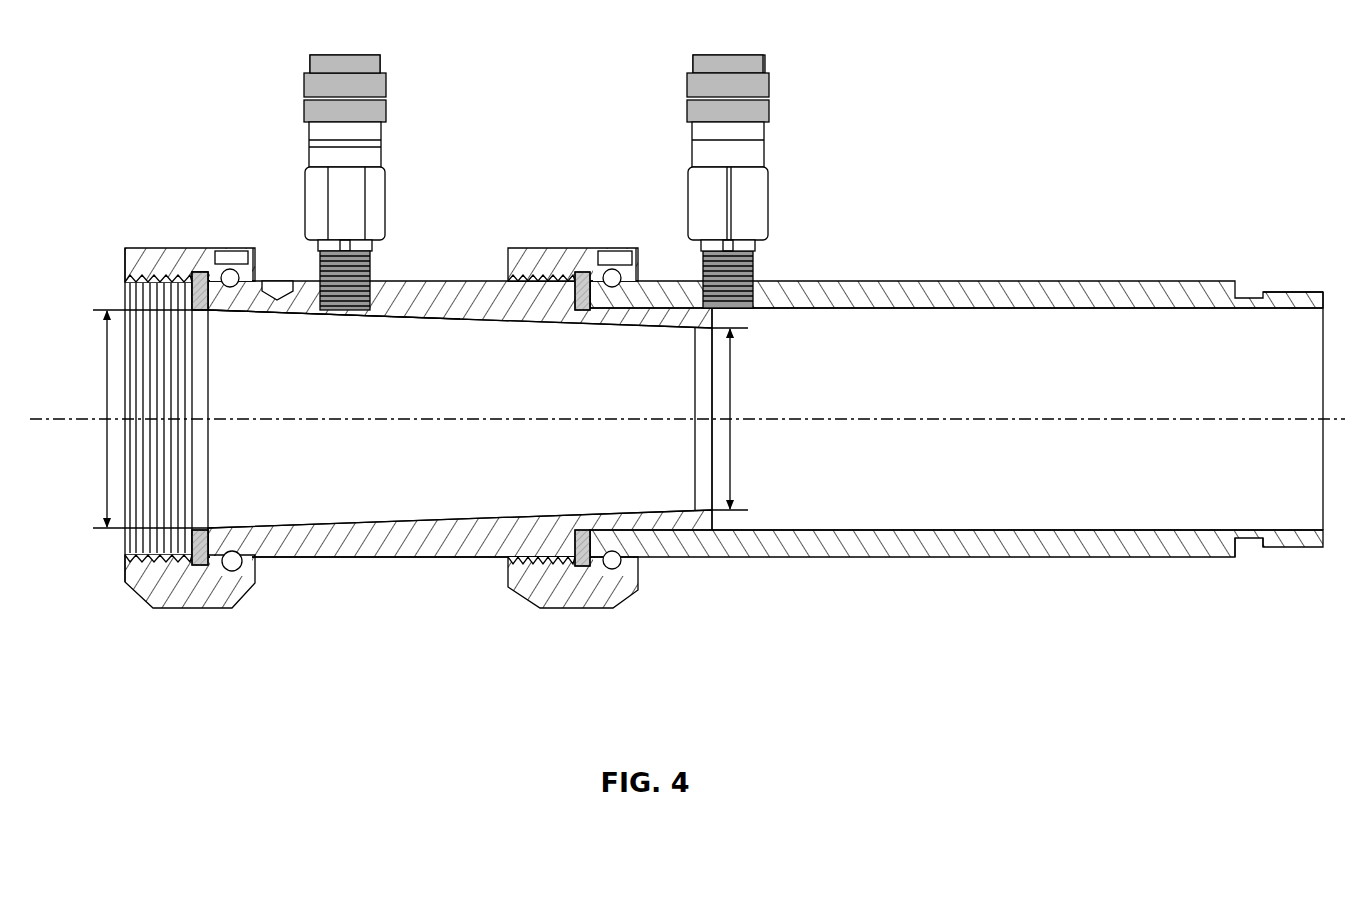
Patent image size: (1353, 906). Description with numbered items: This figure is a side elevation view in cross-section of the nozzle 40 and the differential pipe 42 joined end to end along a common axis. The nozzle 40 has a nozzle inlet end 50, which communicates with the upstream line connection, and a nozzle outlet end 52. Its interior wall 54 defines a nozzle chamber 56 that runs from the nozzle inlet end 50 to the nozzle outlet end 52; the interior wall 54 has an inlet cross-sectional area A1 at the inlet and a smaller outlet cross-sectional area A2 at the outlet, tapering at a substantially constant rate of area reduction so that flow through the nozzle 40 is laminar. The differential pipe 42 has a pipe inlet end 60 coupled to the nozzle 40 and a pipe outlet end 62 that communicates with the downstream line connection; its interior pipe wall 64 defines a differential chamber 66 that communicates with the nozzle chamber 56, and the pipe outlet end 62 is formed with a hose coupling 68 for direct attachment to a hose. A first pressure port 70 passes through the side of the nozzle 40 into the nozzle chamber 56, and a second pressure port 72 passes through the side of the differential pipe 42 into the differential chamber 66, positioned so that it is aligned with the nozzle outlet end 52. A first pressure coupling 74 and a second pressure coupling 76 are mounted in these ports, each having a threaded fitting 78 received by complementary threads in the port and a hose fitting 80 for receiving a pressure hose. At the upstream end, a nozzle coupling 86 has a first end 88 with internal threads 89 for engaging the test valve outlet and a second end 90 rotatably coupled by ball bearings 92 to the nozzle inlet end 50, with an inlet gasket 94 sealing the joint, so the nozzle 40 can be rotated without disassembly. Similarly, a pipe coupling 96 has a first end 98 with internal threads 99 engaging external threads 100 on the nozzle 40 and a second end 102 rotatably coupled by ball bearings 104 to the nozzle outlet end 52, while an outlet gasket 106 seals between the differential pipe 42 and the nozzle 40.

The nozzle 40 is at (326, 554).
The differential pipe 42 is at (1033, 280).
The nozzle inlet end 50 is at (208, 452).
The nozzle outlet end 52 is at (708, 524).
The interior wall 54 is at (430, 510).
The nozzle chamber 56 is at (460, 391).
The pipe inlet end 60 is at (582, 298).
The pipe outlet end 62 is at (1325, 297).
The interior pipe wall 64 is at (1046, 531).
The differential chamber 66 is at (1017, 392).
The hose coupling 68 is at (1268, 552).
The first pressure port 70 is at (345, 313).
The second pressure port 72 is at (730, 312).
The first pressure coupling 74 is at (308, 151).
The second pressure coupling 76 is at (768, 150).
The threaded fitting 78 is at (372, 288).
The hose fitting 80 is at (380, 136).
The nozzle coupling 86 is at (171, 246).
The first end 88 is at (125, 263).
The internal threads 89 is at (130, 545).
The second end 90 is at (245, 251).
The ball bearings 92 is at (232, 568).
The inlet gasket 94 is at (198, 564).
The pipe coupling 96 is at (538, 245).
The first end 98 is at (506, 279).
The internal threads 99 is at (520, 540).
The external threads 100 is at (506, 281).
The second end 102 is at (641, 576).
The ball bearings 104 is at (611, 568).
The outlet gasket 106 is at (582, 558).
The inlet cross-sectional area A1 is at (106, 364).
The outlet cross-sectional area A2 is at (733, 397).